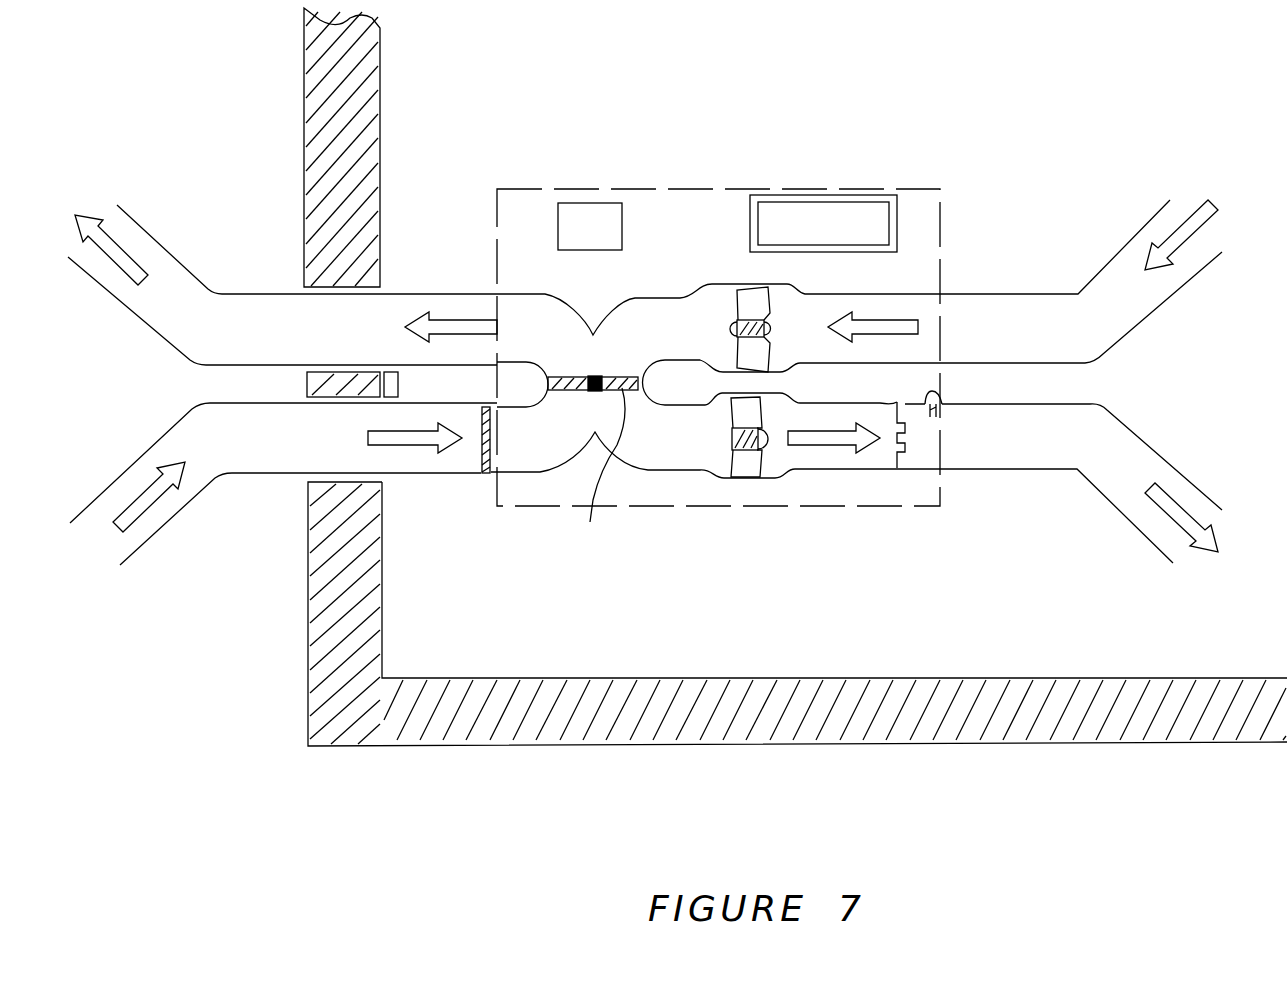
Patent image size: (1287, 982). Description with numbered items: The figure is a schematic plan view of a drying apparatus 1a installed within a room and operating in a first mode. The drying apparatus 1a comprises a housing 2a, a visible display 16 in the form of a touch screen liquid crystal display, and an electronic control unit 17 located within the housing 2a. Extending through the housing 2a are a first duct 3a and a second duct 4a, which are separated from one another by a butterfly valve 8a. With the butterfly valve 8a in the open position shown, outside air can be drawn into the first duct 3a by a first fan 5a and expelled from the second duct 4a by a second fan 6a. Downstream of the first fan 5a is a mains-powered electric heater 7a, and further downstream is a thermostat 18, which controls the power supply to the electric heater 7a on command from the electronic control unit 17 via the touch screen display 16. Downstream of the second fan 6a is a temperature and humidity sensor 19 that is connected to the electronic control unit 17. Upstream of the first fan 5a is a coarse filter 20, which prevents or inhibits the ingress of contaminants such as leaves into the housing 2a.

The drying apparatus 1a is at (752, 297).
The housing 2a is at (670, 189).
The first duct 3a is at (646, 479).
The second duct 4a is at (645, 286).
The first fan 5a is at (766, 478).
The second fan 6a is at (780, 307).
The electric heater 7a is at (898, 468).
The butterfly valve 8a is at (604, 482).
The visible display 16 is at (795, 195).
The electronic control unit 17 is at (574, 203).
The thermostat 18 is at (943, 405).
The temperature and humidity sensor 19 is at (652, 375).
The coarse filter 20 is at (474, 462).